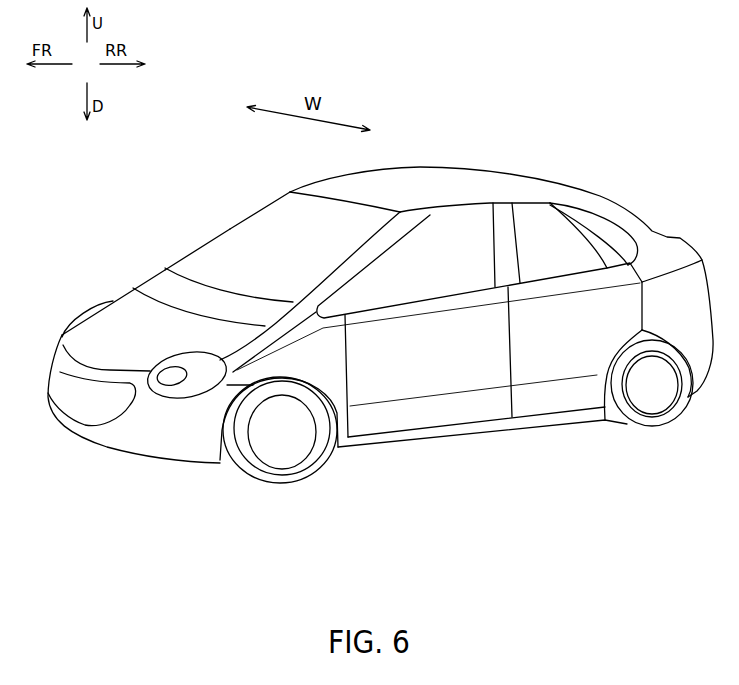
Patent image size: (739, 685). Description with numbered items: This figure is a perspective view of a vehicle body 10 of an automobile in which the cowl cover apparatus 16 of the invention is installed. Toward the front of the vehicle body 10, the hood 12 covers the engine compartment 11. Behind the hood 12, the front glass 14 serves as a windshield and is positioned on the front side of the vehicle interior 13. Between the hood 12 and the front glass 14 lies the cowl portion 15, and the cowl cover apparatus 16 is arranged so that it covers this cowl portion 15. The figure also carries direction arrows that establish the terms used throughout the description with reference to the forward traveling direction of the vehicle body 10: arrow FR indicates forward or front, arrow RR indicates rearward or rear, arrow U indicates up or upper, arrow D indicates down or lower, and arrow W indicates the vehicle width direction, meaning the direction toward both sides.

The vehicle body 10 is at (513, 151).
The engine compartment 11 is at (87, 334).
The hood 12 is at (115, 311).
The vehicle interior 13 is at (258, 221).
The front glass 14 is at (212, 243).
The cowl portion 15 is at (182, 292).
The cowl cover apparatus 16 is at (143, 276).